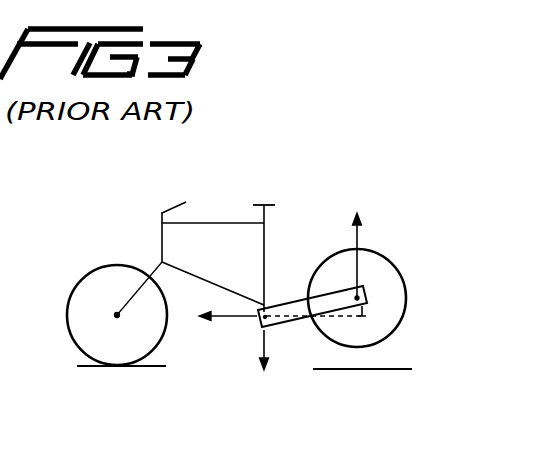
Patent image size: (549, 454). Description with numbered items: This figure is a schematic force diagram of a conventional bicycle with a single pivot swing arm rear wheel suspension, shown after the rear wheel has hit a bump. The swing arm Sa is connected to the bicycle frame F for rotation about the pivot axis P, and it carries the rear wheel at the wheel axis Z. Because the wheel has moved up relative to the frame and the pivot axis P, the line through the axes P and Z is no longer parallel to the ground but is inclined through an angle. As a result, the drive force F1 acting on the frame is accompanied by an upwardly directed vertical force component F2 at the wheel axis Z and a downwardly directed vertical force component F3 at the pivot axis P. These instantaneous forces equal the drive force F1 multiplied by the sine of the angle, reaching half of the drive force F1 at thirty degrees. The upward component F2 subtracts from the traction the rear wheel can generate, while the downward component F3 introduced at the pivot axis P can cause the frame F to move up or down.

The frame F is at (238, 223).
The swing arm Sa is at (302, 303).
The wheel axis Z is at (359, 297).
The pivot axis P is at (265, 317).
The drive force F1 is at (217, 320).
The upwardly directed vertical force component F2 is at (361, 244).
The downwardly directed vertical force component F3 is at (263, 369).